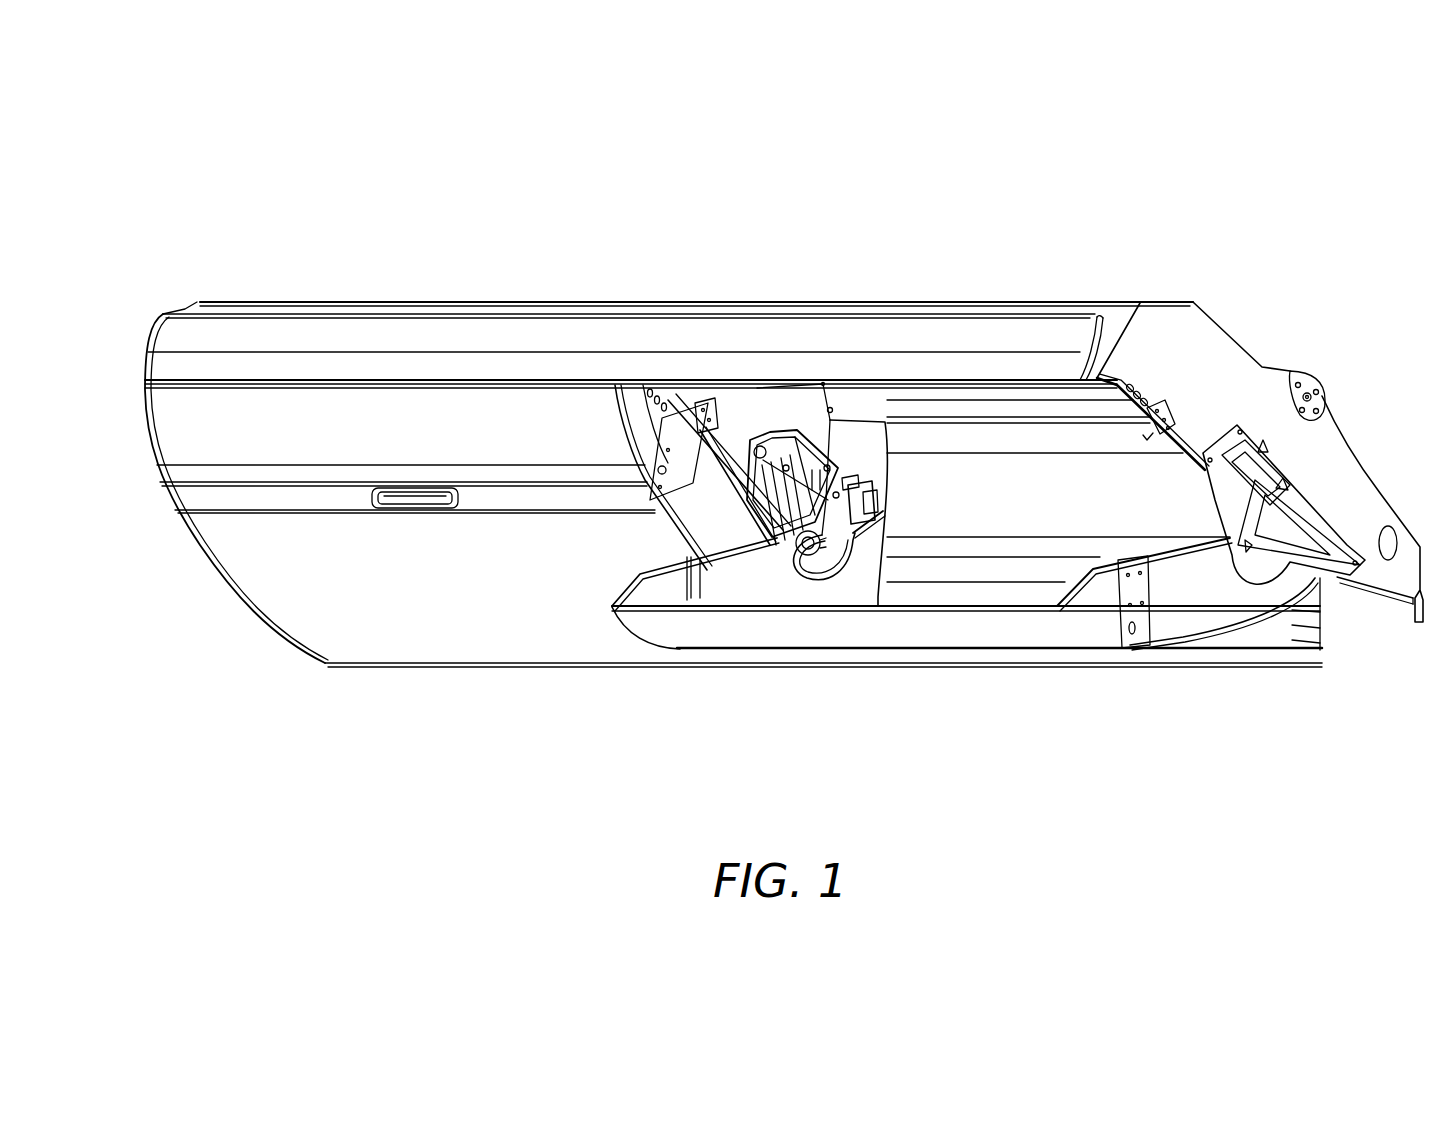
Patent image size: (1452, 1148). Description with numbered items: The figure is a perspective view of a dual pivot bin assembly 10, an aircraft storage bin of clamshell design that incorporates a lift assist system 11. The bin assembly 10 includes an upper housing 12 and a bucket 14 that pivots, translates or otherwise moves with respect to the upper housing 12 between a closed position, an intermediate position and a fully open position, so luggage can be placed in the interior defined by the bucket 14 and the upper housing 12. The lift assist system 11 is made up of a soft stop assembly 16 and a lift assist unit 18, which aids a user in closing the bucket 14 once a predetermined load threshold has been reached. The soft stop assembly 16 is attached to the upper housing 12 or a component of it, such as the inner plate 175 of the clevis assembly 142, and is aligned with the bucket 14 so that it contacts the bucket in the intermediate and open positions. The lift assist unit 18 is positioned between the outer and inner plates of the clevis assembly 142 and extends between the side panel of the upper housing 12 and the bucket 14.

The pivot bin assembly 10 is at (1296, 216).
The lift assist system 11 is at (840, 578).
The upper housing 12 is at (1208, 348).
The bucket 14 is at (993, 632).
The soft stop assembly 16 is at (883, 507).
The lift assist unit 18 is at (778, 478).
The clevis assembly 142 is at (753, 428).
The inner plate 175 is at (785, 402).